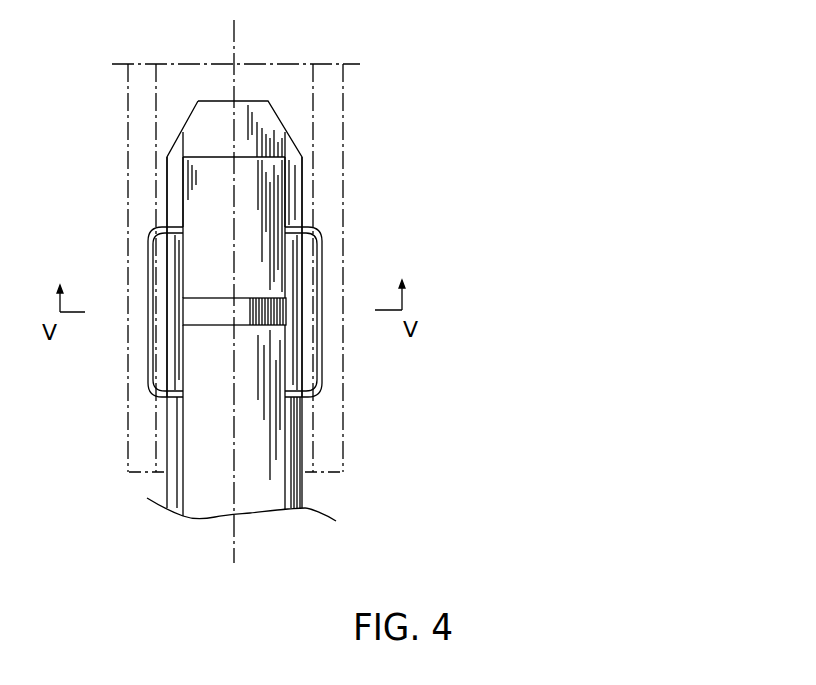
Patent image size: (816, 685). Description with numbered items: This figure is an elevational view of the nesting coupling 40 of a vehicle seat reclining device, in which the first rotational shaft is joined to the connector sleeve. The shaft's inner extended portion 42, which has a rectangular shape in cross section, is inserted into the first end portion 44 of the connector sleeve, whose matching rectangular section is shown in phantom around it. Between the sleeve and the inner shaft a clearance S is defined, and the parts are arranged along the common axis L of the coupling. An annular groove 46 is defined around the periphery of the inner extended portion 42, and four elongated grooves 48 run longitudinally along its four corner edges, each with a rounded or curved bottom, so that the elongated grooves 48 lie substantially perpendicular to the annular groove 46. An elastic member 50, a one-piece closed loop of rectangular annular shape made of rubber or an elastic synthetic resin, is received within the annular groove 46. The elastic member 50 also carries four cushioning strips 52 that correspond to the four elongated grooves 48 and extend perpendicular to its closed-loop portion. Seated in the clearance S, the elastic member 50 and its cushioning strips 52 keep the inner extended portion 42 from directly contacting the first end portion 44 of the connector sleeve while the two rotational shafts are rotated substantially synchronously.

The nesting coupling 40 is at (147, 105).
The inner extended portion 42 is at (268, 184).
The first end portion 44 is at (133, 225).
The annular groove 46 is at (235, 323).
The elongated grooves 48 is at (173, 177).
The elastic member 50 is at (217, 303).
The cushioning strips 52 is at (160, 332).
The clearance S is at (312, 427).
The longitudinal axis L is at (241, 313).